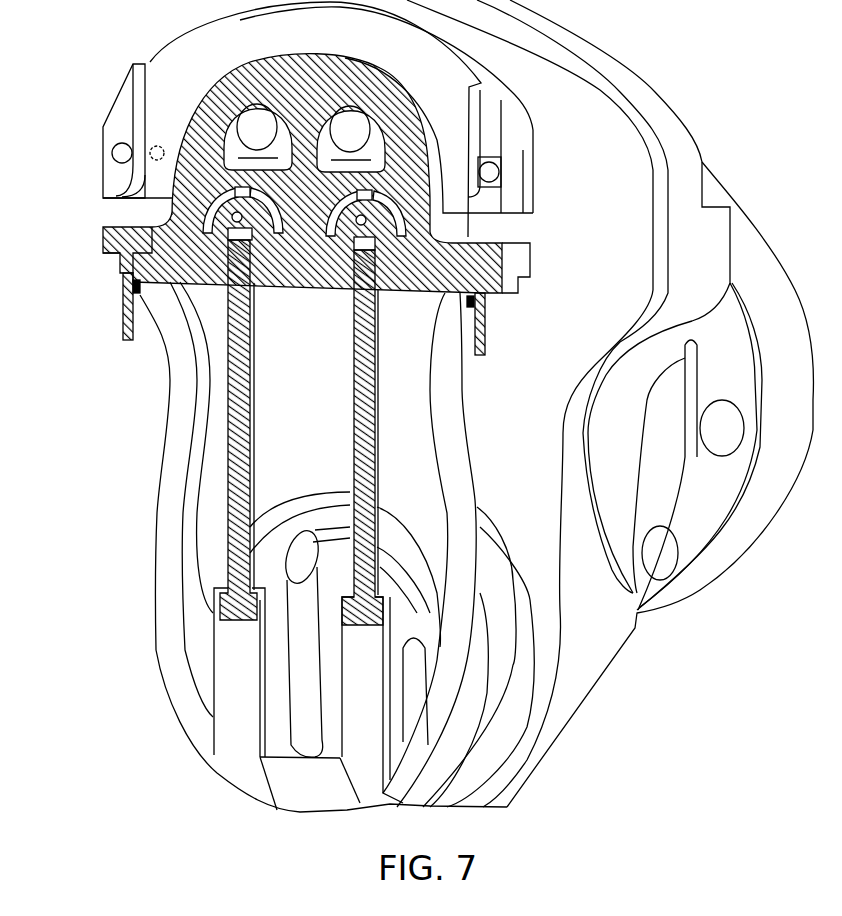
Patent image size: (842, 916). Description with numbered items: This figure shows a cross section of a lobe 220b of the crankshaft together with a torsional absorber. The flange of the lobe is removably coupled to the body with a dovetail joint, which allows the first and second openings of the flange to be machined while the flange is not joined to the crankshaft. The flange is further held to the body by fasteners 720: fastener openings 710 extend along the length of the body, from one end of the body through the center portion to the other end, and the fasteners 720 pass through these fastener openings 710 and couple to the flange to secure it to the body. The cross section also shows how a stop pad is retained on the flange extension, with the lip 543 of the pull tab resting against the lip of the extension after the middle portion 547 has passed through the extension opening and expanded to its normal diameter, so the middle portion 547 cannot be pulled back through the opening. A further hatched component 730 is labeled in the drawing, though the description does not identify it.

The cap body 730 is at (222, 92).
The lobe 220b is at (125, 95).
The lip 543 is at (115, 268).
The middle portion 547 is at (122, 280).
The fasteners 720 is at (228, 520).
The fastener openings 710 is at (233, 660).